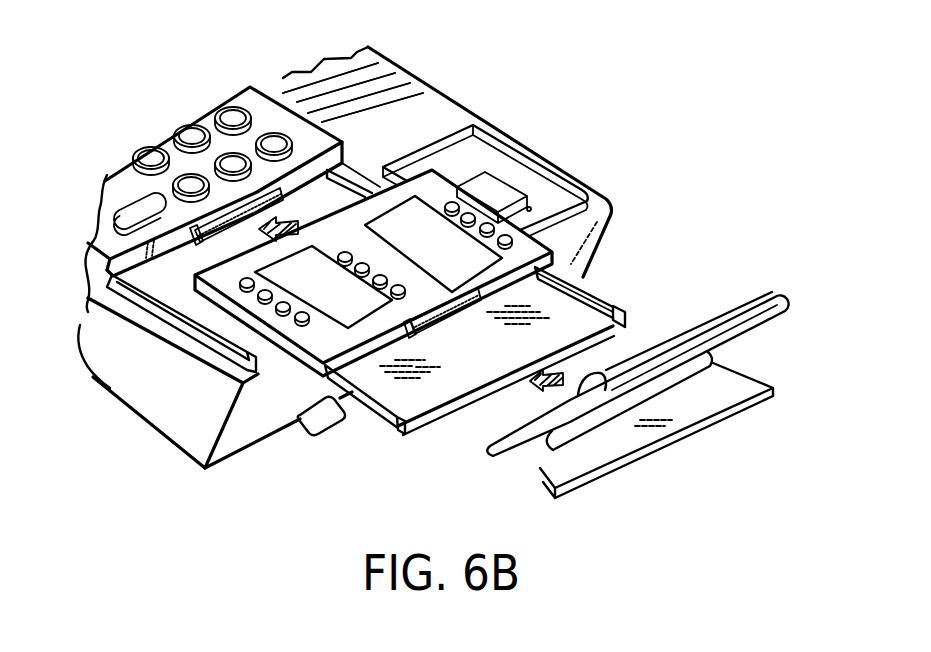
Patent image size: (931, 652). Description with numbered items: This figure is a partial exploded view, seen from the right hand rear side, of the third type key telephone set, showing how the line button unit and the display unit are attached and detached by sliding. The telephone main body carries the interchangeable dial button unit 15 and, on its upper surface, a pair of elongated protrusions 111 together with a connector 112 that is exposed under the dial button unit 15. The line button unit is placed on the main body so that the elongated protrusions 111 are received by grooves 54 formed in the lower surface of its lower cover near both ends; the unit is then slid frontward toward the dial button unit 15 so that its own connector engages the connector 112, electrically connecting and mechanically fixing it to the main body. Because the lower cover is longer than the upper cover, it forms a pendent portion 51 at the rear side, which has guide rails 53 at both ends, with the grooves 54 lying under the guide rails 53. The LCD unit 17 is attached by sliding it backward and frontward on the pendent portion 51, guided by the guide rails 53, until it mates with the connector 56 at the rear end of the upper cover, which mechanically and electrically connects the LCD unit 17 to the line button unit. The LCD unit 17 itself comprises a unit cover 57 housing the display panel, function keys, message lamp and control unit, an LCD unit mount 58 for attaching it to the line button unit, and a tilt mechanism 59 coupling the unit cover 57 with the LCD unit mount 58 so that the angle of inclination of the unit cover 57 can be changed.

The dial button unit 15 is at (193, 106).
The elongated protrusions 111 is at (347, 178).
The connector 112 is at (203, 240).
The pendent portion 51 is at (438, 388).
The guide rails 53 is at (377, 413).
The grooves 54 is at (401, 429).
The connector 56 is at (455, 318).
The liquid crystal display (LCD) unit 17 is at (735, 340).
The unit cover 57 is at (490, 457).
The LCD unit mount 58 is at (717, 398).
The tilt mechanism 59 is at (590, 430).